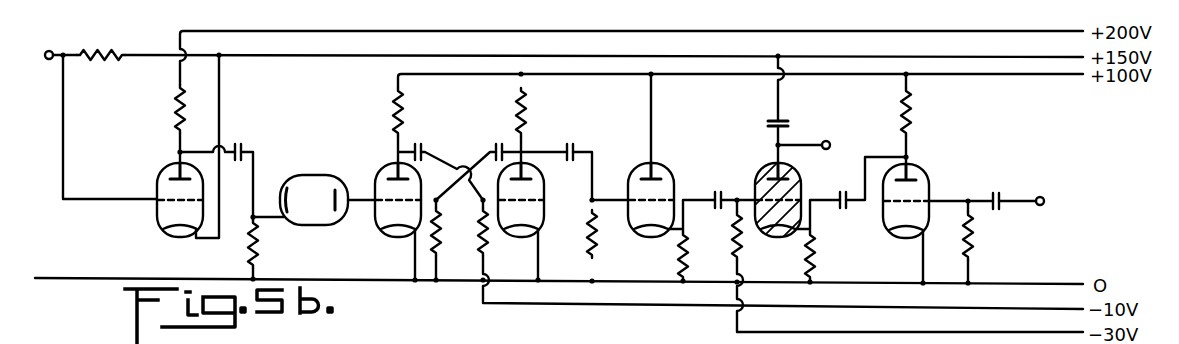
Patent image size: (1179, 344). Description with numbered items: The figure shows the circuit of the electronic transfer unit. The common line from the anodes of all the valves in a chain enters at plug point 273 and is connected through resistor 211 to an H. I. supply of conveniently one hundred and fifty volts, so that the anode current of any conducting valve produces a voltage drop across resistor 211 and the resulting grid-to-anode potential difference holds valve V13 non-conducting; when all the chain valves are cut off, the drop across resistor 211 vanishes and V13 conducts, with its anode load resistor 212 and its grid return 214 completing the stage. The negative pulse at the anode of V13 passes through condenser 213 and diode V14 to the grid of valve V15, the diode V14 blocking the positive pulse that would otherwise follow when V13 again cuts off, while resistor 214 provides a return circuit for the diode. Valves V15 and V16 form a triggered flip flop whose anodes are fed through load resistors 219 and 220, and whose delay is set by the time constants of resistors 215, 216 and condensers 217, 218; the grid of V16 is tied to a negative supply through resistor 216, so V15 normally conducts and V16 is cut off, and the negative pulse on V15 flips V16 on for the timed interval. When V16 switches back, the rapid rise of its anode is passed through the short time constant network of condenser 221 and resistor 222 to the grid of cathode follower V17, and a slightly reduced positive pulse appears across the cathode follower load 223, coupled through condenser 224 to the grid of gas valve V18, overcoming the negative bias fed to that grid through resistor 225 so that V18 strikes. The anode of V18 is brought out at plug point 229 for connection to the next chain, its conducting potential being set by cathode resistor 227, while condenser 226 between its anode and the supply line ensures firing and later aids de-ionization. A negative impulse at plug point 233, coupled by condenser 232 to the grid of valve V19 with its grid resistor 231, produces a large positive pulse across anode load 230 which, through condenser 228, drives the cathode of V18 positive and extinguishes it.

The plug point 273 is at (33, 47).
The resistor 211 is at (115, 66).
The resistor 212 is at (178, 110).
The condenser 213 is at (238, 142).
The resistor 214 is at (257, 240).
The valve V13 is at (160, 210).
The diode V14 is at (338, 218).
The valve V15 is at (384, 173).
The resistor 215 is at (453, 234).
The resistor 216 is at (501, 234).
The valve V16 is at (540, 220).
The condenser 217 is at (429, 148).
The condenser 218 is at (495, 148).
The plate load resistor 219 is at (396, 96).
The plate load resistor 220 is at (524, 103).
The condenser 221 is at (575, 152).
The resistor 222 is at (594, 263).
The cathode follower V17 is at (673, 173).
The cathode follower load 223 is at (686, 266).
The coupling capacitor 224 is at (726, 185).
The resistor 225 is at (755, 236).
The gas valve V18 is at (800, 178).
The condenser 226 is at (771, 117).
The cathode resistor 227 is at (838, 261).
The condenser 228 is at (852, 186).
The plug point 229 is at (846, 139).
The valve V19 is at (940, 163).
The anode load 230 is at (927, 115).
The grid resistor 231 is at (986, 236).
The coupling capacitor 232 is at (992, 197).
The plug point 233 is at (1047, 204).